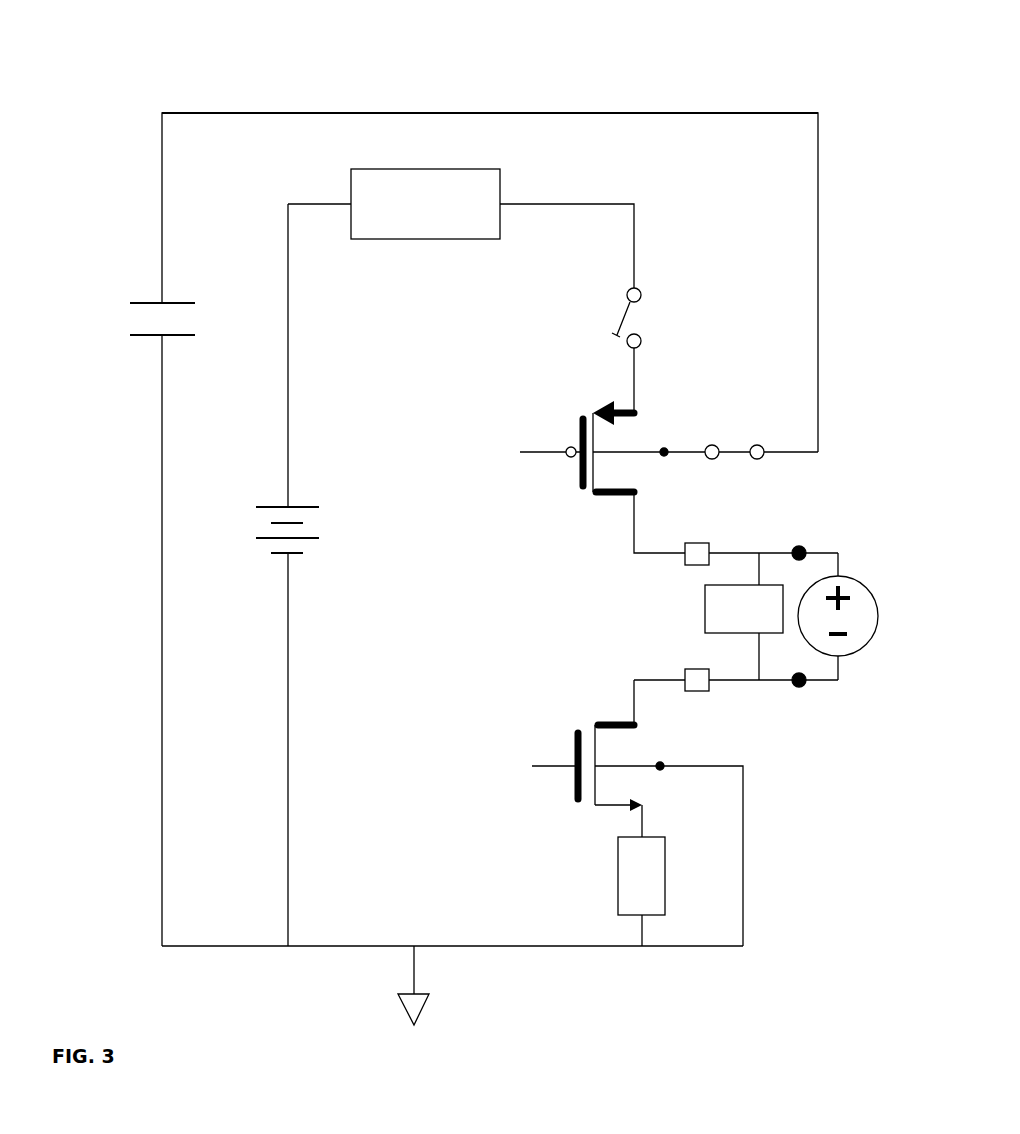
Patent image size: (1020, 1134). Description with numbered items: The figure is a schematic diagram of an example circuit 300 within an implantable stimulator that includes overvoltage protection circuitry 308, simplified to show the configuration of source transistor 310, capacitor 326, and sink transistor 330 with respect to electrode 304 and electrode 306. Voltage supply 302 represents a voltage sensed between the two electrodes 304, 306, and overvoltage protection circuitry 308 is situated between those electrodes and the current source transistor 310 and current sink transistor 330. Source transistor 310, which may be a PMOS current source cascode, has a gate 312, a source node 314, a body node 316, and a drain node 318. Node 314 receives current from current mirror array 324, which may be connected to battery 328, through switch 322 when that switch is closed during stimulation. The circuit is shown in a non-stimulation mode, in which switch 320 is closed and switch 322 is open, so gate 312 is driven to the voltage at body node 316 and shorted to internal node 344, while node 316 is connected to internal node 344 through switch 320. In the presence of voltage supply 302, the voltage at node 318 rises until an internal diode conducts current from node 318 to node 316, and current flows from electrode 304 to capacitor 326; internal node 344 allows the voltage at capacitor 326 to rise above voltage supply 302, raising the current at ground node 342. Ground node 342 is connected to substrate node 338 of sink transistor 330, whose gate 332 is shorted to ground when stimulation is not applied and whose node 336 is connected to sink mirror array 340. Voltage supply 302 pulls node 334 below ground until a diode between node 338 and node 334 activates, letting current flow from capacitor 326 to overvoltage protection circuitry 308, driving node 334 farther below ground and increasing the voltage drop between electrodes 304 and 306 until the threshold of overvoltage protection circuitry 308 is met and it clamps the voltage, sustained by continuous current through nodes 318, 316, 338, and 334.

The circuit 300 is at (620, 60).
The voltage supply 302 is at (870, 593).
The electrode 304 is at (802, 549).
The electrode 306 is at (800, 688).
The overvoltage protection circuitry 308 is at (705, 606).
The source transistor 310 is at (548, 494).
The gate 312 is at (520, 452).
The source node 314 is at (603, 399).
The body node 316 is at (664, 450).
The drain node 318 is at (622, 498).
The switch 320 is at (757, 445).
The switch 322 is at (613, 335).
The current mirror array 324 is at (425, 240).
The capacitor 326 is at (130, 318).
The battery 328 is at (319, 522).
The sink transistor 330 is at (532, 795).
The gate 332 is at (538, 766).
The sink node 334 is at (595, 725).
The source node 336 is at (605, 808).
The substrate node 338 is at (660, 763).
The sink mirror array 340 is at (665, 857).
The ground node 342 is at (405, 1010).
The internal node 344 is at (280, 113).